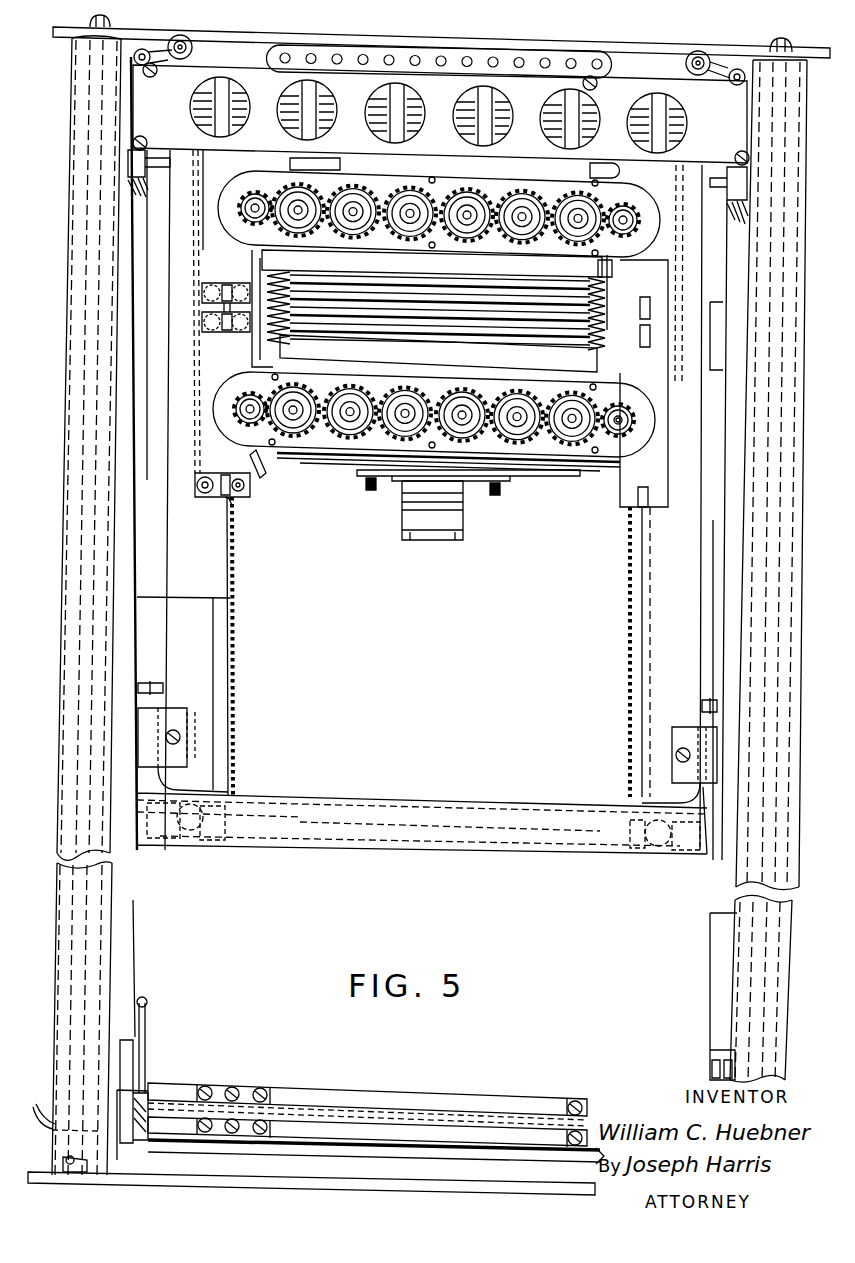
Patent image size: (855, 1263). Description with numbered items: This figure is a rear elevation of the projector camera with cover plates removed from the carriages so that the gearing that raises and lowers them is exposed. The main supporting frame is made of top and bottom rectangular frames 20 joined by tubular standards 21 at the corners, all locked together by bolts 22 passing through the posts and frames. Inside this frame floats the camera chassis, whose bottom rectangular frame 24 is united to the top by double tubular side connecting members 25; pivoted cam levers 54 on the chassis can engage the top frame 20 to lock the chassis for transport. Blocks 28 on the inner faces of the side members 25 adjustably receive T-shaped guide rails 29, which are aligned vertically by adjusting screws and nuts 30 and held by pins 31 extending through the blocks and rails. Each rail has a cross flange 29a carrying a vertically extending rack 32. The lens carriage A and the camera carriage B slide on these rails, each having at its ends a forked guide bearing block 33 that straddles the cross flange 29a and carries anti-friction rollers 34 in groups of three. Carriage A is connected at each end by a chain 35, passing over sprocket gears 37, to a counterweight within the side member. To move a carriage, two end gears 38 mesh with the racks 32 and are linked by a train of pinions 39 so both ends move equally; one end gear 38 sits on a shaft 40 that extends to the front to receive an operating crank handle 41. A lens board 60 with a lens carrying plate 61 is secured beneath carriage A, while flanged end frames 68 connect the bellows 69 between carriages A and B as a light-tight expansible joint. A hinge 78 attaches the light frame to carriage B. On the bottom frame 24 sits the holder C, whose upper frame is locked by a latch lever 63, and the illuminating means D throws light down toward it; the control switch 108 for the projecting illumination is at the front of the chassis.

The rectangular frame 20 is at (308, 40).
The tubular standard 21 is at (70, 110).
The bolt 22 is at (110, 20).
The bottom rectangular frame 24 is at (205, 1156).
The side connecting member 25 is at (222, 598).
The block 28 is at (185, 716).
The guide rail 29 is at (195, 577).
The cross flange 29a is at (222, 563).
The adjusting screws and nuts 30 is at (162, 689).
The pin 31 is at (180, 736).
The rack 32 is at (240, 543).
The guide bearing block 33 is at (207, 192).
The anti-friction roller 34 is at (236, 498).
The chain 35 is at (193, 238).
The sprocket gear 37 is at (192, 42).
The end gear 38 is at (627, 410).
The train of pinions 39 is at (398, 247).
The shaft 40 is at (622, 424).
The operating crank handle 41 is at (262, 472).
The pivoted cam lever 54 is at (152, 50).
The lens board 60 is at (326, 470).
The lens carrying plate 61 is at (500, 482).
The latch lever 63 is at (146, 1037).
The flanged end frame 68 is at (427, 311).
The bellows 69 is at (292, 279).
The hinge 78 is at (585, 170).
The control switch 108 is at (708, 370).
The lens carriage A is at (553, 465).
The camera carriage B is at (206, 258).
The holder C is at (290, 1090).
The illuminating means D is at (205, 843).